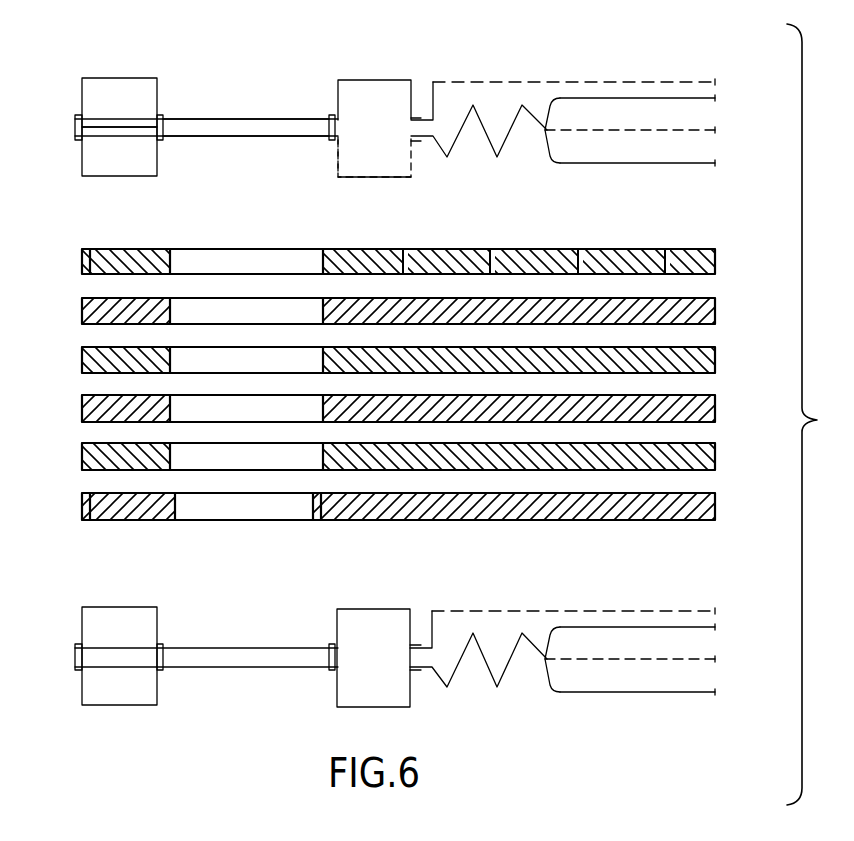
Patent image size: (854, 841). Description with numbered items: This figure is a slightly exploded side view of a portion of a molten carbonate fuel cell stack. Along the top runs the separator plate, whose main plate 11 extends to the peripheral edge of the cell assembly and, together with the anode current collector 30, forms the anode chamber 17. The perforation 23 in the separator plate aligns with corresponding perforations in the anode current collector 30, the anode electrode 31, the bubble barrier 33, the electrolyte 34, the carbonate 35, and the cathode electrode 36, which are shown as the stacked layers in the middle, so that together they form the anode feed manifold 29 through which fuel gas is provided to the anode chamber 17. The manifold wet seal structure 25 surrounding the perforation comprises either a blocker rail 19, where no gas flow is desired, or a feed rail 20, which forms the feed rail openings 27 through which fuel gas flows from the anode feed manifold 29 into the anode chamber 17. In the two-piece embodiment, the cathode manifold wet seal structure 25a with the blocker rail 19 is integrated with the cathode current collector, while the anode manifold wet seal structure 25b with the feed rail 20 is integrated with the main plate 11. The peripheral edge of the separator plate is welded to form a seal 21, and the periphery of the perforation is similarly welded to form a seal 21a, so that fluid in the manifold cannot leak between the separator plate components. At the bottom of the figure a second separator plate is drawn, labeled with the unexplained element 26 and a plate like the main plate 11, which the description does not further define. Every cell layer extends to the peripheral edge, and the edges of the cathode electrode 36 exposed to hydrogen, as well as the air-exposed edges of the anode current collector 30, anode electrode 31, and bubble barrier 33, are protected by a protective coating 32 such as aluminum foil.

The main plate 11 is at (665, 163).
The anode chamber 17 is at (490, 158).
The blocker rail 19 is at (372, 80).
The feed rail 20 is at (385, 178).
The seal 21 is at (74, 129).
The seal 21a is at (164, 122).
The perforation 23 is at (235, 97).
The manifold wet seal structure 25 is at (105, 705).
The cathode manifold wet seal structure 25a is at (122, 78).
The anode manifold wet seal structure 25b is at (105, 177).
The handle 26 is at (665, 692).
The feed rail openings 27 is at (337, 158).
The anode feed manifold 29 is at (242, 682).
The anode current collector 30 is at (83, 256).
The anode electrode 31 is at (83, 305).
The protective coating 32 is at (175, 520).
The bubble barrier 33 is at (715, 360).
The electrolyte 34 is at (715, 408).
The carbonate 35 is at (715, 456).
The cathode electrode 36 is at (715, 504).